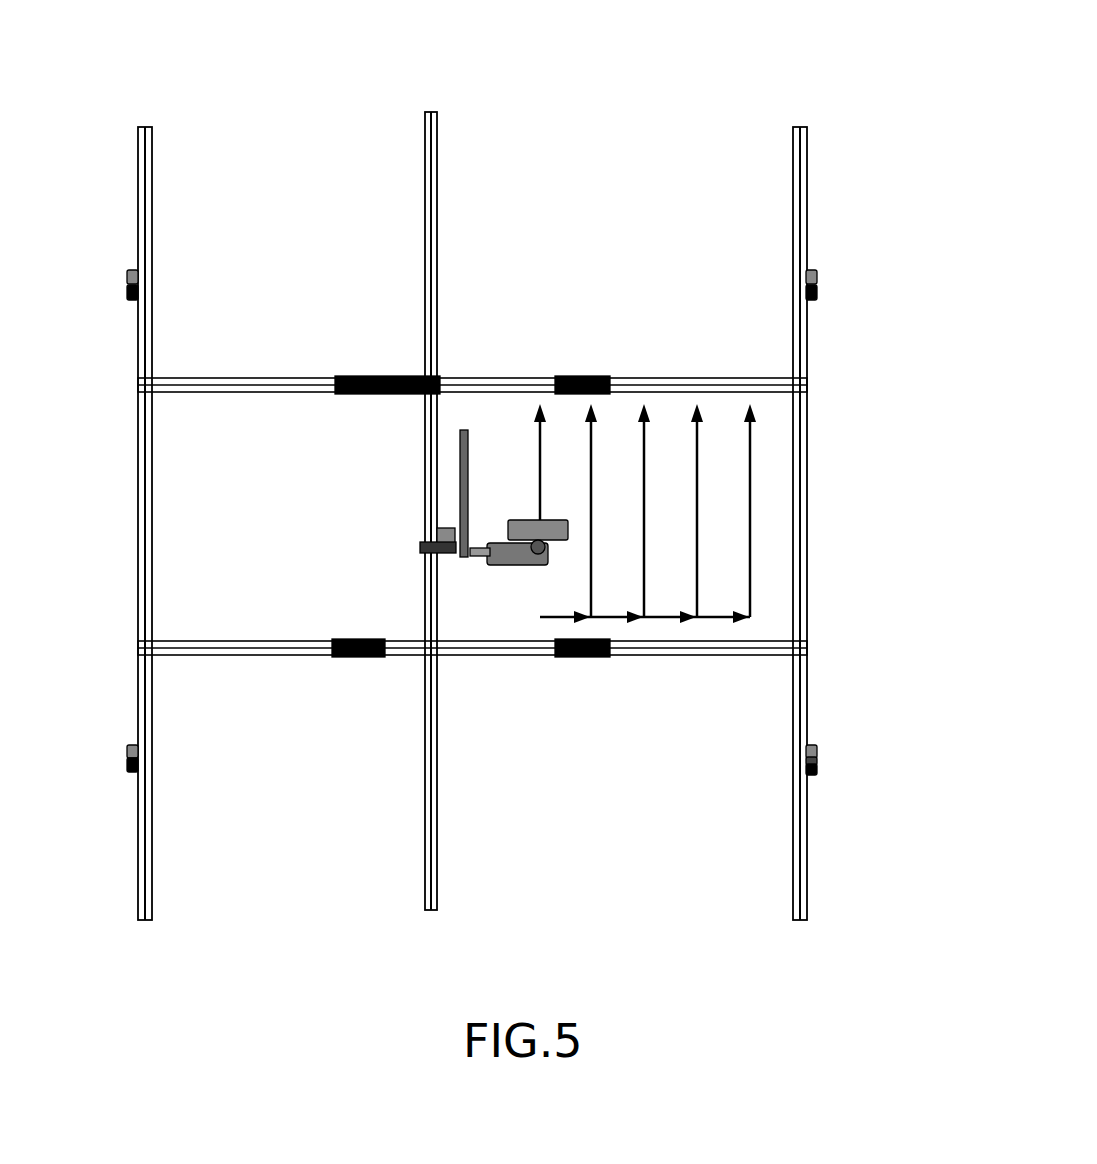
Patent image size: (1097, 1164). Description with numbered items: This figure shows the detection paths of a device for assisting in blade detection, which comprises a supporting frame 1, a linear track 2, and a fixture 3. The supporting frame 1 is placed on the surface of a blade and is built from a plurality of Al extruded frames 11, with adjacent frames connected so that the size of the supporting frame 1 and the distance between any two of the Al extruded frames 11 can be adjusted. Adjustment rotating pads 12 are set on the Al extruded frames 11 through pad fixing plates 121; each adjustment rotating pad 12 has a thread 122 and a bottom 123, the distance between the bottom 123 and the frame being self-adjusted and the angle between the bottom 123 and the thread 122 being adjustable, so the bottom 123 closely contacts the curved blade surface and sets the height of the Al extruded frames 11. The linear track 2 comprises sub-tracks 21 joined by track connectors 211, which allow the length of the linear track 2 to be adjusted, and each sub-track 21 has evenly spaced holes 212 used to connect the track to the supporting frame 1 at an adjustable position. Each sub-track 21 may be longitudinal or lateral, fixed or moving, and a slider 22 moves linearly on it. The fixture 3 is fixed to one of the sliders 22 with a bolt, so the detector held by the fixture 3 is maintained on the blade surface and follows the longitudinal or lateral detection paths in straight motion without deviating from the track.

The supporting frame 1 is at (932, 93).
The Al extruded frame 11 is at (800, 197).
The adjustment rotating pad 12 is at (903, 646).
The pad fixing plate 121 is at (812, 757).
The thread 122 is at (810, 748).
The bottom 123 is at (812, 770).
The linear track 2 is at (275, 428).
The sub-track 21 is at (430, 438).
The track connector 211 is at (430, 527).
The holes 212 is at (430, 477).
The slider 22 is at (425, 550).
The fixture 3 is at (513, 610).